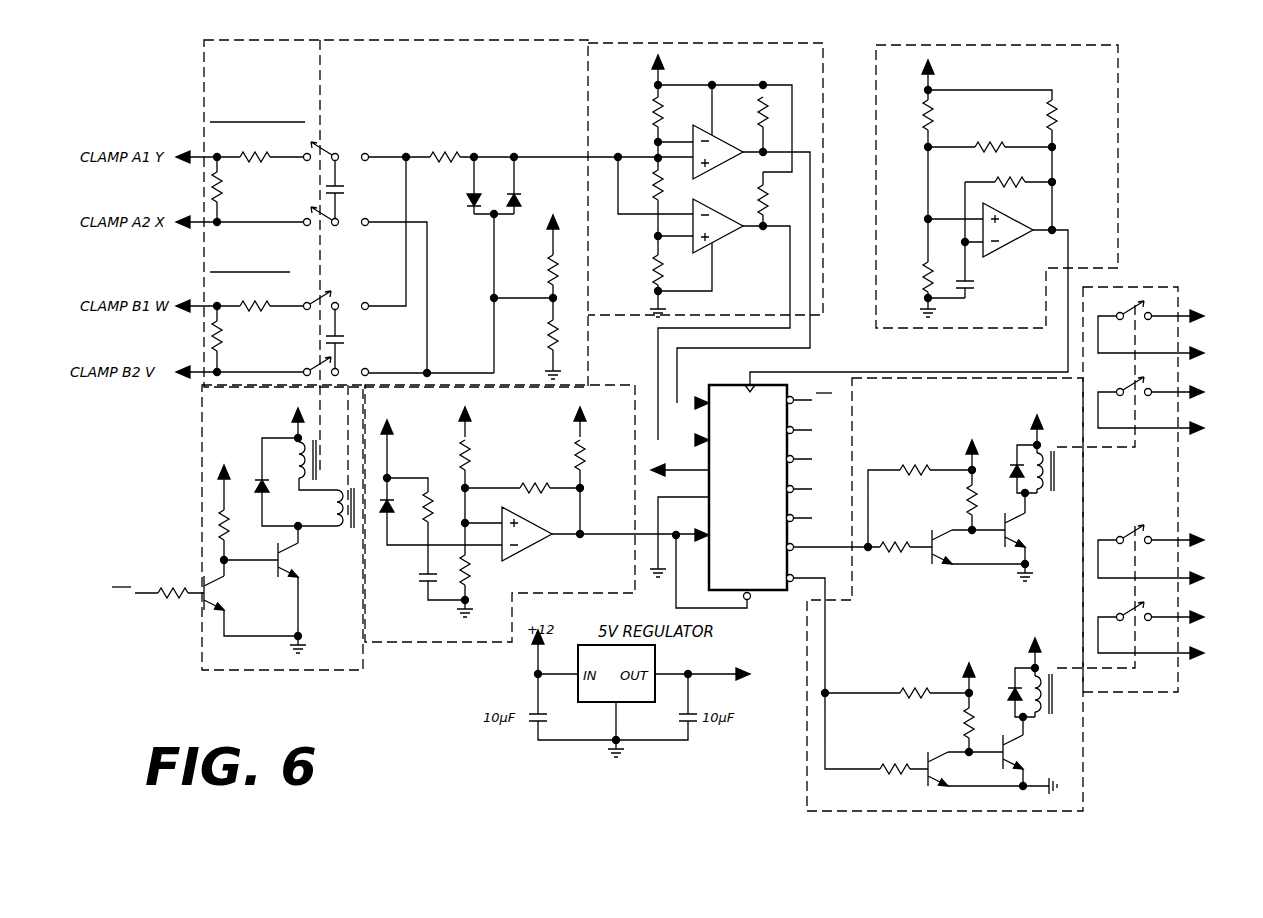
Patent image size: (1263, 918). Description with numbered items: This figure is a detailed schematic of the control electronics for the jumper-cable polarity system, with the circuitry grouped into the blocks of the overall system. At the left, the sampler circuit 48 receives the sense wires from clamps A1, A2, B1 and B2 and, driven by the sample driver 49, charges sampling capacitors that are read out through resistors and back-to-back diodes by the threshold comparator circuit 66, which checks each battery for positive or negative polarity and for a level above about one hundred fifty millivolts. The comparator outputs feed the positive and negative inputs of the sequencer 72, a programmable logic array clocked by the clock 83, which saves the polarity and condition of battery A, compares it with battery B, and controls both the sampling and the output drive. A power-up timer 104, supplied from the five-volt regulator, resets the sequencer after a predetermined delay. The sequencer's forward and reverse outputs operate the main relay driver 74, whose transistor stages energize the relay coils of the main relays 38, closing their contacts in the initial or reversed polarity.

The sampler circuit 48 is at (194, 90).
The sample driver 49 is at (194, 517).
The threshold comparator circuit 66 is at (826, 95).
The clock 83 is at (1121, 172).
The sequencer 72 is at (789, 383).
The power-up timer 104 is at (440, 645).
The main relay driver 74 is at (1082, 770).
The main relays 38 is at (1136, 694).